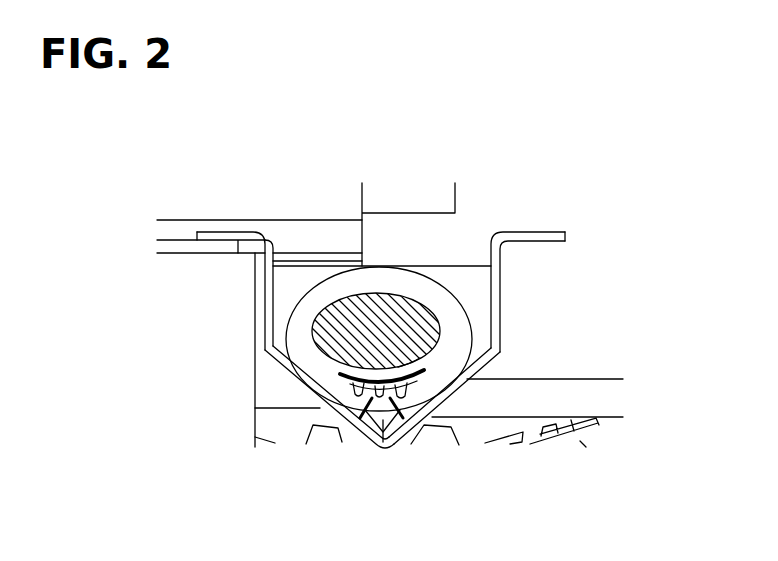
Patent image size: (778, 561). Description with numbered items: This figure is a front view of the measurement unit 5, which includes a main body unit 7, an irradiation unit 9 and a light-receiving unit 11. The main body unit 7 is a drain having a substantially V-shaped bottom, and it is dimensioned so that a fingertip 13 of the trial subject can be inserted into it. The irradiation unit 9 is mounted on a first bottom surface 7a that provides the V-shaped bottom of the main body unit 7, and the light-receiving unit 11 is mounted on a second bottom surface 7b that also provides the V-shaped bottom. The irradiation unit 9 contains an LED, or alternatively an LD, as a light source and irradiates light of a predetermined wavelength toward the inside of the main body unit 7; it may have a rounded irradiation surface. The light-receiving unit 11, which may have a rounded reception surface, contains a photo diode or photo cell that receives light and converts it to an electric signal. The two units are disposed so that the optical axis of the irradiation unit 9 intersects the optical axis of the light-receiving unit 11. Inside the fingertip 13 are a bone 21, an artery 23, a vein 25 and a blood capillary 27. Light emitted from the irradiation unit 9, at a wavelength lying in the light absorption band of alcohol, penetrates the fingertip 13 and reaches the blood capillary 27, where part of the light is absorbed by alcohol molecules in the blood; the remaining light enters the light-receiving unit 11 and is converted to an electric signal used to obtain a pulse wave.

The measurement unit 5 is at (648, 152).
The main body unit 7 is at (500, 300).
The first bottom surface 7a is at (335, 388).
The second bottom surface 7b is at (470, 381).
The irradiation unit 9 is at (372, 442).
The light-receiving unit 11 is at (397, 442).
The fingertip 13 is at (440, 294).
The bone 21 is at (388, 310).
The artery 23 is at (340, 373).
The vein 25 is at (405, 368).
The blood capillary 27 is at (330, 379).